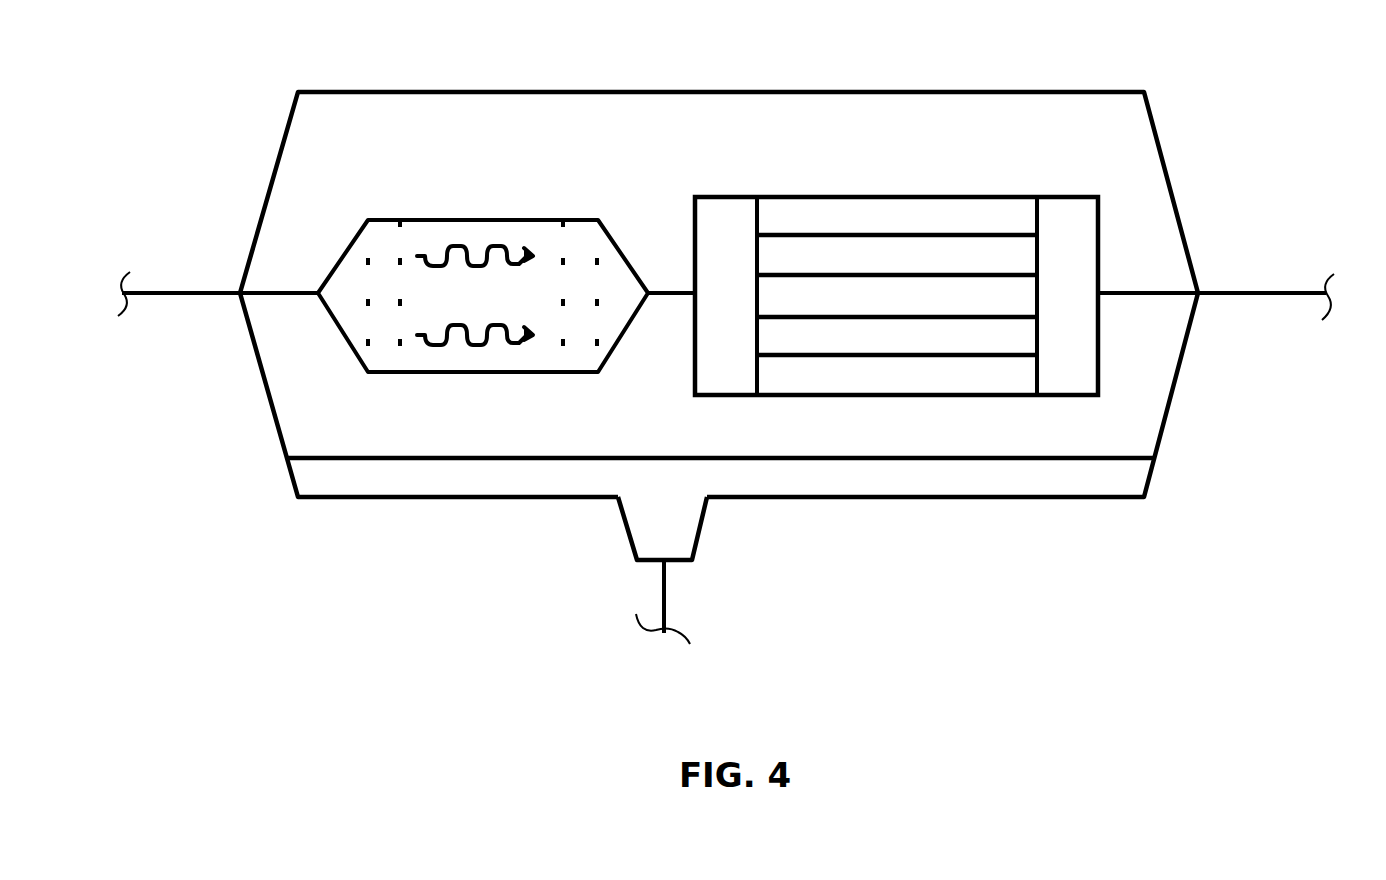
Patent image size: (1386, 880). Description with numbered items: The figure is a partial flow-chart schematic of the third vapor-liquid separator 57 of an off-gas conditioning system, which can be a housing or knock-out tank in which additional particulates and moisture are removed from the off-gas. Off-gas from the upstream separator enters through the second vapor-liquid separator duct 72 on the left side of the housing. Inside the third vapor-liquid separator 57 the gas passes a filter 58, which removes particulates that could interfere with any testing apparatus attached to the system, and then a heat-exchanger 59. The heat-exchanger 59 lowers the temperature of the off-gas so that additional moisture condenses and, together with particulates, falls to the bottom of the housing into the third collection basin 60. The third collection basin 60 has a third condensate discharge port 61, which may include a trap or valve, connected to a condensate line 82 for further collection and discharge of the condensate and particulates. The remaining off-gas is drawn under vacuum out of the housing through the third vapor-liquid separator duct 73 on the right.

The third vapor-liquid separator 57 is at (705, 90).
The filter 58 is at (418, 217).
The heat-exchanger 59 is at (867, 192).
The third collection basin 60 is at (1137, 479).
The third condensate discharge port 61 is at (678, 535).
The second vapor-liquid separator duct 72 is at (177, 297).
The third vapor-liquid separator duct 73 is at (1248, 293).
The condensate line 82 is at (667, 610).